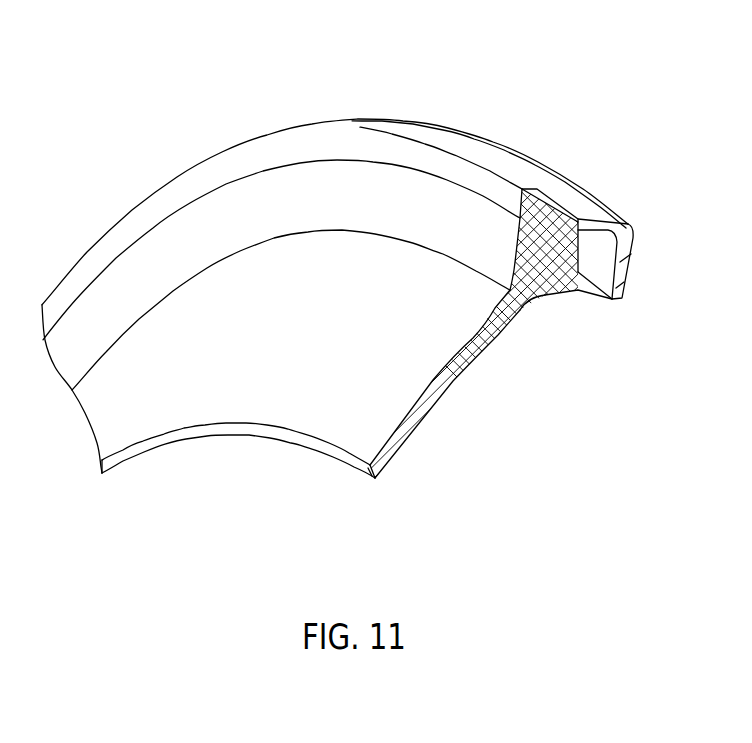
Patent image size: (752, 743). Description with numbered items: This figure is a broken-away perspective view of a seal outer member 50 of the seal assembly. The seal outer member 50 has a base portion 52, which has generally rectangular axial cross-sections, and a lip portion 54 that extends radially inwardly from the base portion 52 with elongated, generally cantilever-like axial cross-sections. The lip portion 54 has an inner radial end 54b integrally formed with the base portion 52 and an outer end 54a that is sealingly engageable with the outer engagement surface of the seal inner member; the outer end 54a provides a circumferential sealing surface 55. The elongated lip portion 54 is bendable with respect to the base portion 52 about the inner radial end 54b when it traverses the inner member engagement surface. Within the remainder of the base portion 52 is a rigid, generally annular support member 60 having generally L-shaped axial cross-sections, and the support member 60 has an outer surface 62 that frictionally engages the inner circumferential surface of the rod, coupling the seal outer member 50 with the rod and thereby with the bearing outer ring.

The seal outer member 50 is at (376, 75).
The base portion 52 is at (576, 320).
The lip portion 54 is at (492, 403).
The outer end 54a is at (380, 478).
The inner radial end 54b is at (530, 295).
The circumferential sealing surface 55 is at (310, 450).
The support member 60 is at (627, 197).
The outer surface 62 is at (581, 196).